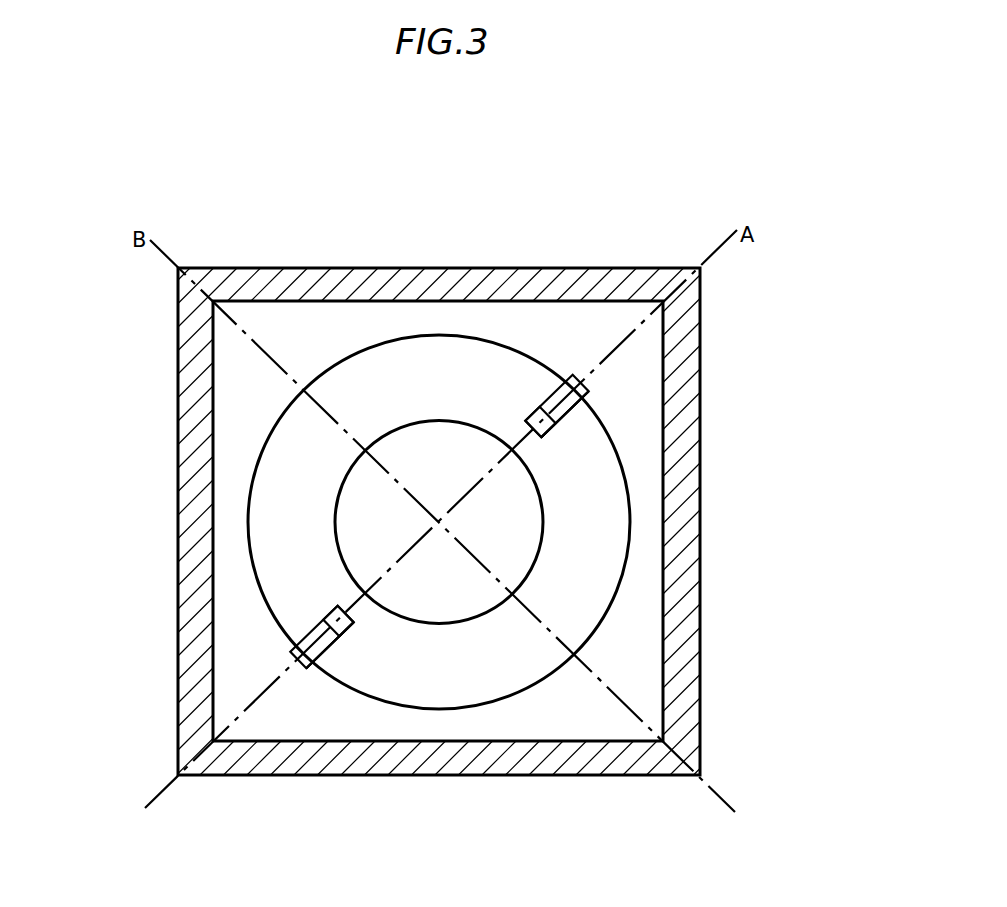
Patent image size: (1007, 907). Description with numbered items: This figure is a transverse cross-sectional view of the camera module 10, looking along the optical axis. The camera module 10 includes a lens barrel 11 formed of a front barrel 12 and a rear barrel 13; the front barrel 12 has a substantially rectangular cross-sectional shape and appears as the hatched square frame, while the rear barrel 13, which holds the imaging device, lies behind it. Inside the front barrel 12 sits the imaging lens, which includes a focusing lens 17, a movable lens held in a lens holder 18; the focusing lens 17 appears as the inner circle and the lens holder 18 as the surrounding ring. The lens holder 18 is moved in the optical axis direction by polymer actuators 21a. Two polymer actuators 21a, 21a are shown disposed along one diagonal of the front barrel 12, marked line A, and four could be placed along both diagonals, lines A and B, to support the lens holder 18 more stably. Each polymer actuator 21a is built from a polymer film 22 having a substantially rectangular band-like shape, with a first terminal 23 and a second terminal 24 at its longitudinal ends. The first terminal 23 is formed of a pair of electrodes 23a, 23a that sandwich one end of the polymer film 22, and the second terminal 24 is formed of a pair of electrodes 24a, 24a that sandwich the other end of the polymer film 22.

The camera module 10 is at (343, 233).
The lens barrel 11 is at (416, 267).
The front barrel 12 is at (700, 673).
The rear barrel 13 is at (615, 712).
The focusing lens 17 is at (512, 530).
The lens holder 18 is at (288, 483).
The polymer actuator 21a is at (587, 408).
The polymer film 22 is at (561, 382).
The first terminal 23 is at (533, 413).
The second terminal 24 is at (326, 423).
The electrode 23a is at (588, 418).
The electrode 24a is at (574, 617).